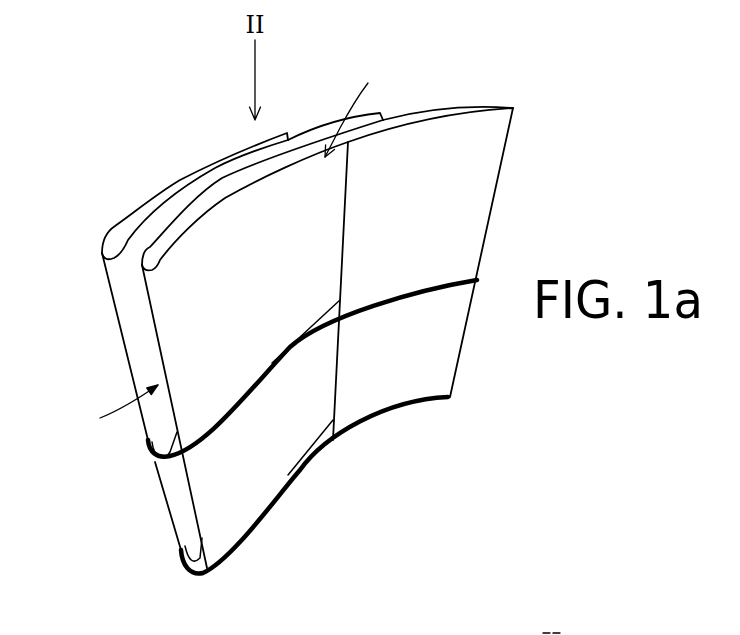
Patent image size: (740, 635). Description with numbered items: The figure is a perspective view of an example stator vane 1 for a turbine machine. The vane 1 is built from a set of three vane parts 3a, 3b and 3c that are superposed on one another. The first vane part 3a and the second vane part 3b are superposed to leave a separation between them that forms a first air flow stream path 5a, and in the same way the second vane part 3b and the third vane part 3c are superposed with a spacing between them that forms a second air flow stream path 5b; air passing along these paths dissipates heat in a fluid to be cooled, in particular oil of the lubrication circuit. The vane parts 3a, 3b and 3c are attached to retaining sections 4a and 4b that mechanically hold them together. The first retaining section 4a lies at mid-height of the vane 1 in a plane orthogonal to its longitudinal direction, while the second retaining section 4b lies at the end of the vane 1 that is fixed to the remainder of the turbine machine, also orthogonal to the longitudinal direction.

The stator vane 1 is at (102, 486).
The first vane part 3a is at (132, 303).
The second vane part 3b is at (237, 223).
The third vane part 3c is at (475, 130).
The first retaining section 4a is at (158, 462).
The second retaining section 4b is at (200, 562).
The air flow stream path 5a is at (119, 415).
The air flow stream path 5b is at (353, 105).